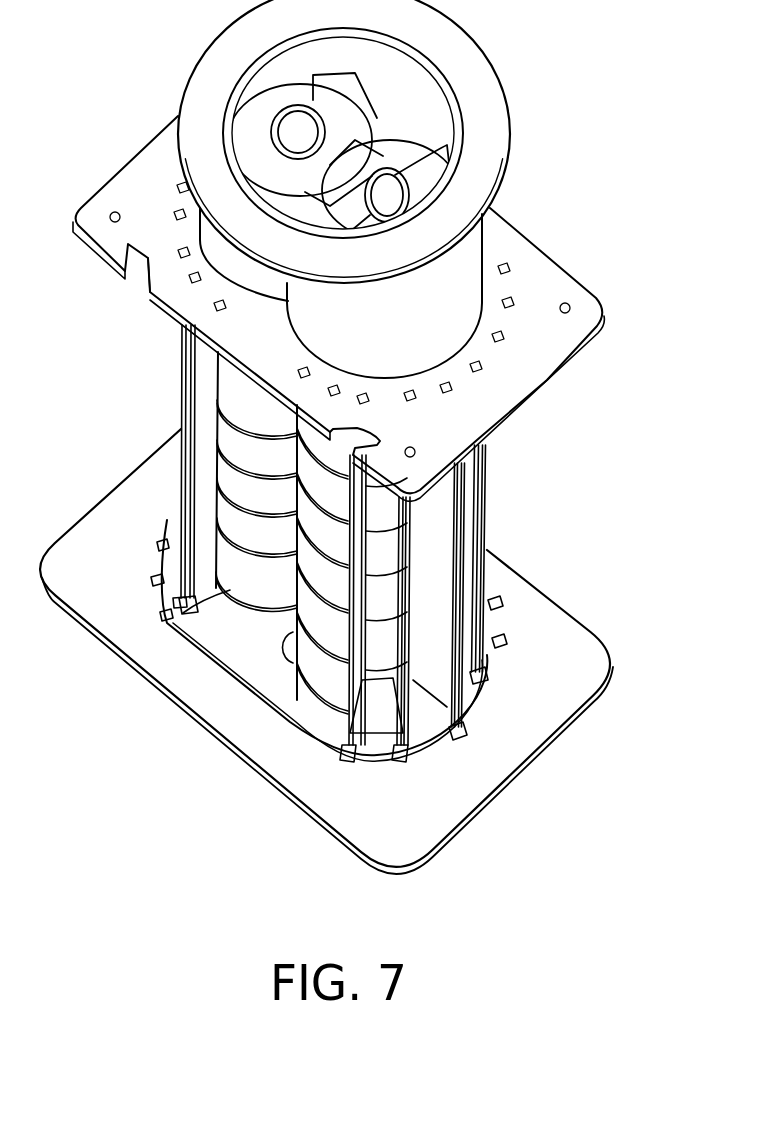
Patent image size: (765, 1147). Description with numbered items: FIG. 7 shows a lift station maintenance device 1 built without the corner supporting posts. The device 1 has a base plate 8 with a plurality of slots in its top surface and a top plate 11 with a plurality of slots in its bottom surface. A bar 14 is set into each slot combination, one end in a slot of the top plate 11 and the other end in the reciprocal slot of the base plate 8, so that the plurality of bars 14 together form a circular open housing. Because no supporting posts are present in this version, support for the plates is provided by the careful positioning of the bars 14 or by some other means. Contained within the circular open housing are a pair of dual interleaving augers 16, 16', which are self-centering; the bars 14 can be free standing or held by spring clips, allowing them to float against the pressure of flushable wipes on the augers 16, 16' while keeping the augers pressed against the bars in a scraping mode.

The device 1 is at (553, 68).
The base plate 8 is at (580, 300).
The top plate 11 is at (327, 823).
The bar 14 is at (200, 447).
The auger 16 is at (329, 614).
The auger 16' is at (197, 535).